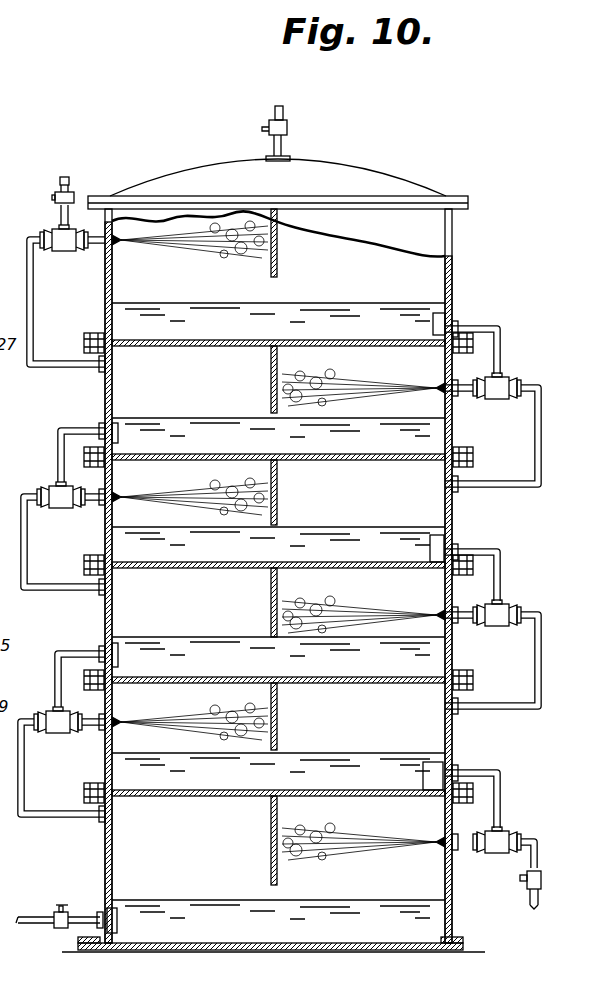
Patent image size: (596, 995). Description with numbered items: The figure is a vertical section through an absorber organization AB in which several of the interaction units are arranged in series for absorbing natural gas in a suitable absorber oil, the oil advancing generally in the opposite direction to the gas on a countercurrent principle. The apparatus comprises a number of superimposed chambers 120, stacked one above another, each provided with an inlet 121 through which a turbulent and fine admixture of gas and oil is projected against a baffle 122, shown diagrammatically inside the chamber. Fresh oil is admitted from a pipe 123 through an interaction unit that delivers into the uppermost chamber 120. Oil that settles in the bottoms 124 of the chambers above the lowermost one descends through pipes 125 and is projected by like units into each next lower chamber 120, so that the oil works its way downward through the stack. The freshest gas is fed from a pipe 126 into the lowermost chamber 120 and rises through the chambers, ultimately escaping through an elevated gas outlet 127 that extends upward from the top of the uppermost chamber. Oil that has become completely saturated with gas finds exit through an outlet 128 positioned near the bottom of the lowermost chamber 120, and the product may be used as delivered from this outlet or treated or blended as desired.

The superimposed chamber 120 is at (196, 295).
The inlet 121 is at (96, 249).
The baffle 122 is at (272, 395).
The pipe 123 is at (78, 165).
The bottom 124 is at (245, 335).
The pipe 125 is at (472, 550).
The pipe 126 is at (530, 860).
The gas outlet 127 is at (285, 116).
The outlet 128 is at (34, 917).
The absorber organization AB is at (395, 188).